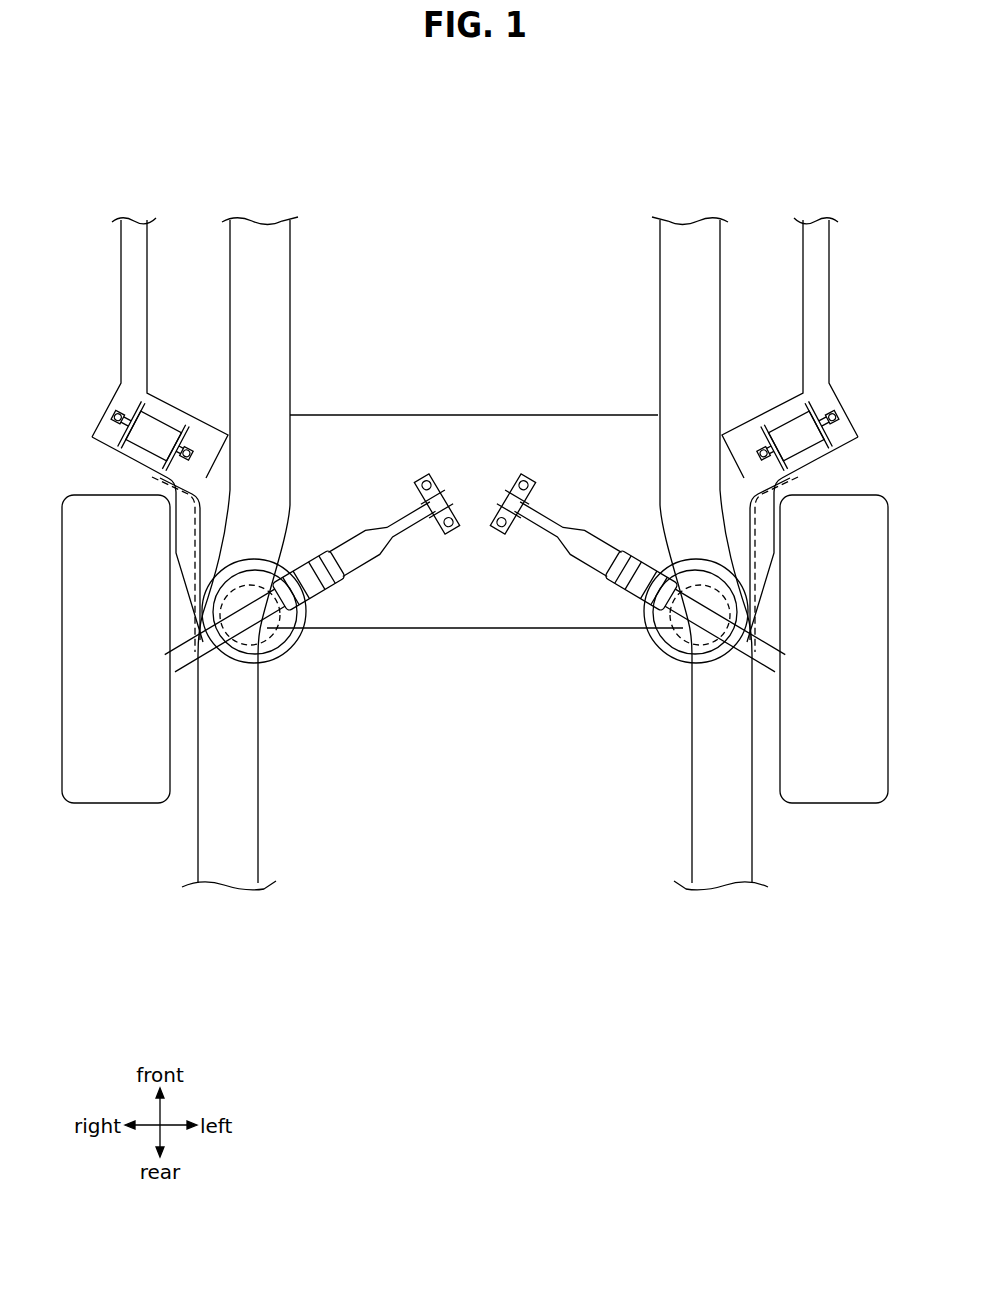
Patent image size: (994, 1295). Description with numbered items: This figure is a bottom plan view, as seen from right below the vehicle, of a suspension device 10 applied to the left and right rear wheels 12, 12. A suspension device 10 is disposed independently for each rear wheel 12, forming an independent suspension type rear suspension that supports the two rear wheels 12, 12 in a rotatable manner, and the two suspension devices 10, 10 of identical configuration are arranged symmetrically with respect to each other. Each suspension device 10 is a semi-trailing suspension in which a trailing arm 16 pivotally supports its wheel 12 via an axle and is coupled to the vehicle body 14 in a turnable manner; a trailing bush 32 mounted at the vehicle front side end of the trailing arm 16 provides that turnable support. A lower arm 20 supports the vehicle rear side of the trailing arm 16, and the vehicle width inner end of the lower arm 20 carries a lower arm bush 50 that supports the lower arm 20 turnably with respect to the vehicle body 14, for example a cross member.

The suspension device 10 is at (305, 668).
The rear wheel 12 is at (117, 806).
The vehicle body 14 is at (104, 417).
The trailing arm 16 is at (174, 530).
The lower arm 20 is at (340, 598).
The trailing bush 32 is at (166, 406).
The lower arm bush 50 is at (447, 492).